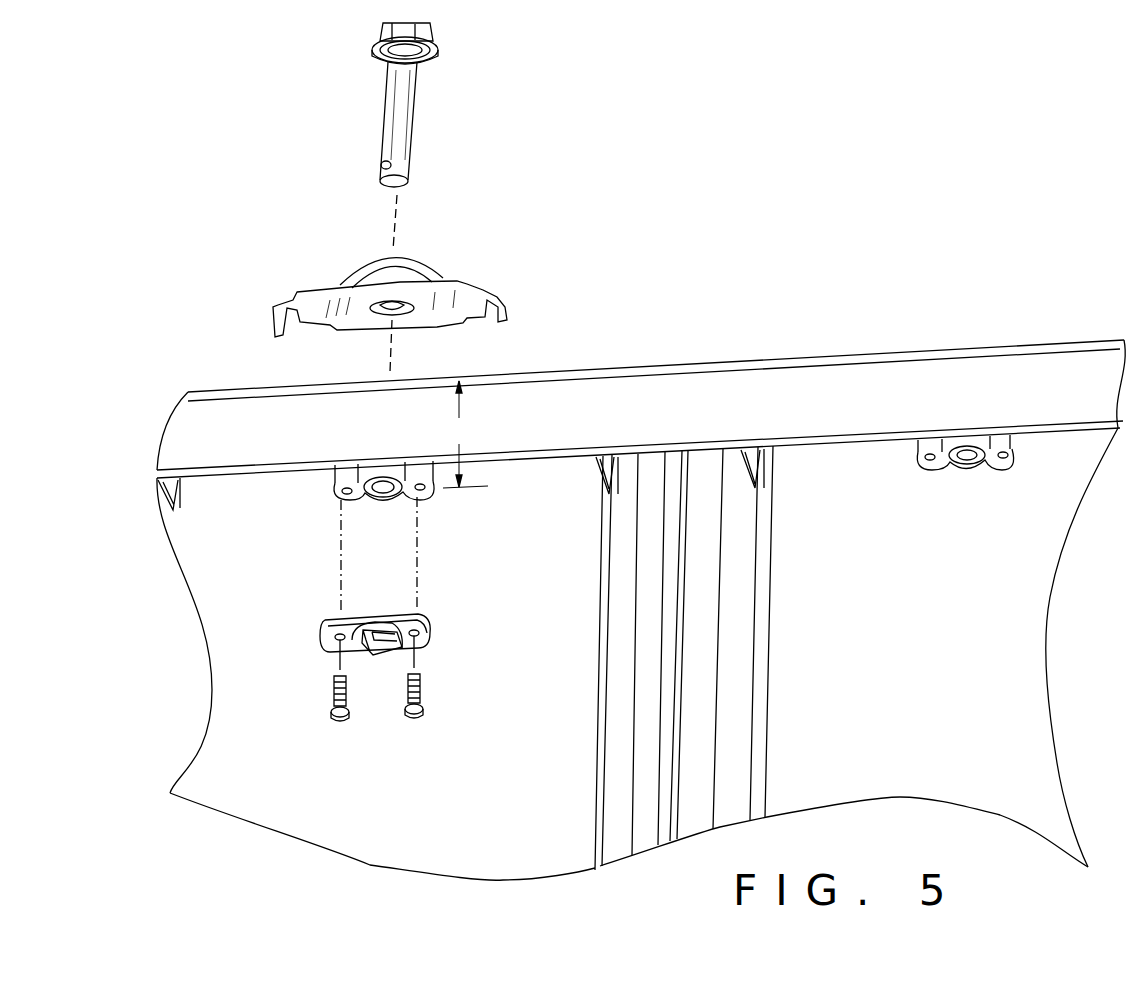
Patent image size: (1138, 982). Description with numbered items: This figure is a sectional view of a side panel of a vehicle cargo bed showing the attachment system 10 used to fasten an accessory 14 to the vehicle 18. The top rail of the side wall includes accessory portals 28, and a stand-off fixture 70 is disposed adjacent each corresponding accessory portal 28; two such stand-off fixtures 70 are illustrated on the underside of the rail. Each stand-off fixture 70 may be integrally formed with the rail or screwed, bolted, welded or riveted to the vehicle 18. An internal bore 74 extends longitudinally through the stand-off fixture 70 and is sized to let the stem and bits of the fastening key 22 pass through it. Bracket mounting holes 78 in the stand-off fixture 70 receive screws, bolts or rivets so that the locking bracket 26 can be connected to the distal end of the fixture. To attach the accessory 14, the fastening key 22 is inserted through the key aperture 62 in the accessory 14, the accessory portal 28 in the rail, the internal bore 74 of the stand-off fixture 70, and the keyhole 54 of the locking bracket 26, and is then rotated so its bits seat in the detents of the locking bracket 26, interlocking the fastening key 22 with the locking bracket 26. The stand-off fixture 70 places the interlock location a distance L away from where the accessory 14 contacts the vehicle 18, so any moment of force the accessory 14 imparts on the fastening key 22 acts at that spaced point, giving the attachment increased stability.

The attachment system 10 is at (237, 236).
The accessory 14 is at (457, 293).
The vehicle 18 is at (810, 393).
The fastening key 22 is at (455, 108).
The locking bracket 26 is at (442, 617).
The accessory portal 28 is at (408, 378).
The keyhole 54 is at (370, 657).
The key aperture 62 is at (390, 317).
The stand-off fixture 70 is at (337, 478).
The internal bore 74 is at (380, 492).
The bracket mounting holes 78 is at (343, 493).